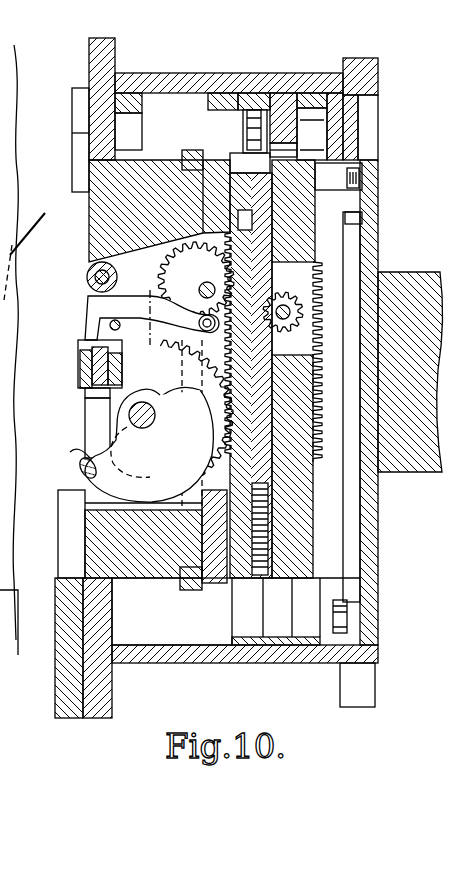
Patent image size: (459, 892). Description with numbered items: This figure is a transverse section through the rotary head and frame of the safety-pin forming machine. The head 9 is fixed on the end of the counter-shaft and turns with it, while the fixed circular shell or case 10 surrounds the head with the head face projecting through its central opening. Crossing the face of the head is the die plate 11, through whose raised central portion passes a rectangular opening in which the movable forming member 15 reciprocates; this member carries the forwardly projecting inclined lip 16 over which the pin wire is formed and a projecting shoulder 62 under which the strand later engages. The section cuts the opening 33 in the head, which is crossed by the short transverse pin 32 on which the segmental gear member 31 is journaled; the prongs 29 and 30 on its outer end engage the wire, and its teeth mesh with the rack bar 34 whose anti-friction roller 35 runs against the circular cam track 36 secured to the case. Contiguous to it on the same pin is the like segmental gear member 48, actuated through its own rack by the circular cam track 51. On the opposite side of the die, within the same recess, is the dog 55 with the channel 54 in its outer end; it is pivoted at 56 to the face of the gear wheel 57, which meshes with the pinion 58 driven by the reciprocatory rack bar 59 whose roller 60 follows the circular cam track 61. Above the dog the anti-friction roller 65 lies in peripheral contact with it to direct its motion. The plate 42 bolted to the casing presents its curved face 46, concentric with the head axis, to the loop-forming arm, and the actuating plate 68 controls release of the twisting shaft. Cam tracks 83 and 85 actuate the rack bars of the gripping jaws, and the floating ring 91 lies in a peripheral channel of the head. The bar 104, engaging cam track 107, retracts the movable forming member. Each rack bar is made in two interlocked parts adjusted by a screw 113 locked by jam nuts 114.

The head 9 is at (93, 552).
The shell or case 10 is at (170, 665).
The die plate 11 is at (100, 400).
The movable forming member 15 is at (78, 348).
The inclined lip 16 is at (78, 370).
The prong 29 is at (69, 452).
The prong 30 is at (94, 474).
The segmental gear member 31 is at (149, 445).
The transverse pin 32 is at (156, 416).
The opening 33 is at (187, 425).
The rack bar 34 is at (246, 532).
The anti-friction roller 35 is at (243, 94).
The circular cam track 36 is at (256, 93).
The plate 42 is at (55, 698).
The curved face 46 is at (63, 568).
The segmental gear member 48 is at (198, 352).
The circular cam track 51 is at (232, 92).
The channel 54 is at (92, 306).
The dog 55 is at (141, 309).
The pivot 56 is at (195, 328).
The gear wheel 57 is at (196, 280).
The pinion 58 is at (283, 309).
The rack bar 59 is at (344, 252).
The anti-friction roller 60 is at (348, 607).
The circular cam track 61 is at (362, 118).
The projecting shoulder 62 is at (78, 340).
The anti-friction roller 65 is at (88, 272).
The actuating plate 68 is at (72, 158).
The cam track 83 is at (313, 93).
The cam track 85 is at (282, 93).
The floating ring 91 is at (190, 151).
The bar 104 is at (122, 371).
The cam track 107 is at (142, 110).
The screw 113 is at (257, 588).
The jam nuts 114 is at (360, 218).